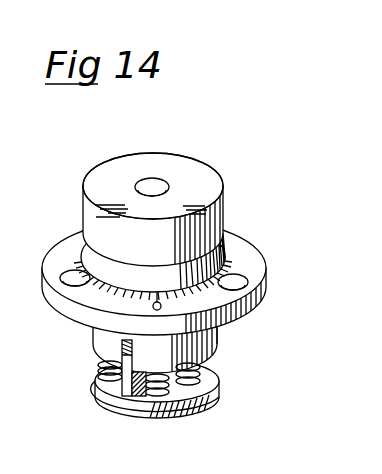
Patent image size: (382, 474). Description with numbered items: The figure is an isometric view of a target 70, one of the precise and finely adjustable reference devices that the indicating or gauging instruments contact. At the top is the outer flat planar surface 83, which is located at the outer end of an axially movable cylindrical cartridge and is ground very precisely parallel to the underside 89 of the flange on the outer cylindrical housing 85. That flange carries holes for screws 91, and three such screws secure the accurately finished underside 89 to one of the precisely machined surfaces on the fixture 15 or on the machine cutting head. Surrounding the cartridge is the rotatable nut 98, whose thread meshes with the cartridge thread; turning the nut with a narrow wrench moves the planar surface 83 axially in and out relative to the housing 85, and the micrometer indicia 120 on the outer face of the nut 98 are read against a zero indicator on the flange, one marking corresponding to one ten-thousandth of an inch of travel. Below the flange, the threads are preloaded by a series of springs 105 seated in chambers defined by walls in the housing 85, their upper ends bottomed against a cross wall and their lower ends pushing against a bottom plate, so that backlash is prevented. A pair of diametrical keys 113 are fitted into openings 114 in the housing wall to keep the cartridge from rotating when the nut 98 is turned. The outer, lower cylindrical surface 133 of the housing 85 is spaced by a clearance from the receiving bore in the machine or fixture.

The fixture 15 is at (176, 113).
The target 70 is at (68, 180).
The outer flat planar surface 83 is at (187, 168).
The rotatable nut 98 is at (221, 256).
The micrometer indicia 120 is at (92, 258).
The screws 91 is at (70, 280).
The outer cylindrical housing 85 is at (82, 333).
The underside of the flange 89 is at (236, 323).
The openings in the housing wall 114 is at (121, 347).
The outer lower cylindrical surface 133 is at (211, 354).
The springs 105 is at (98, 367).
The diametrical keys 113 is at (117, 391).